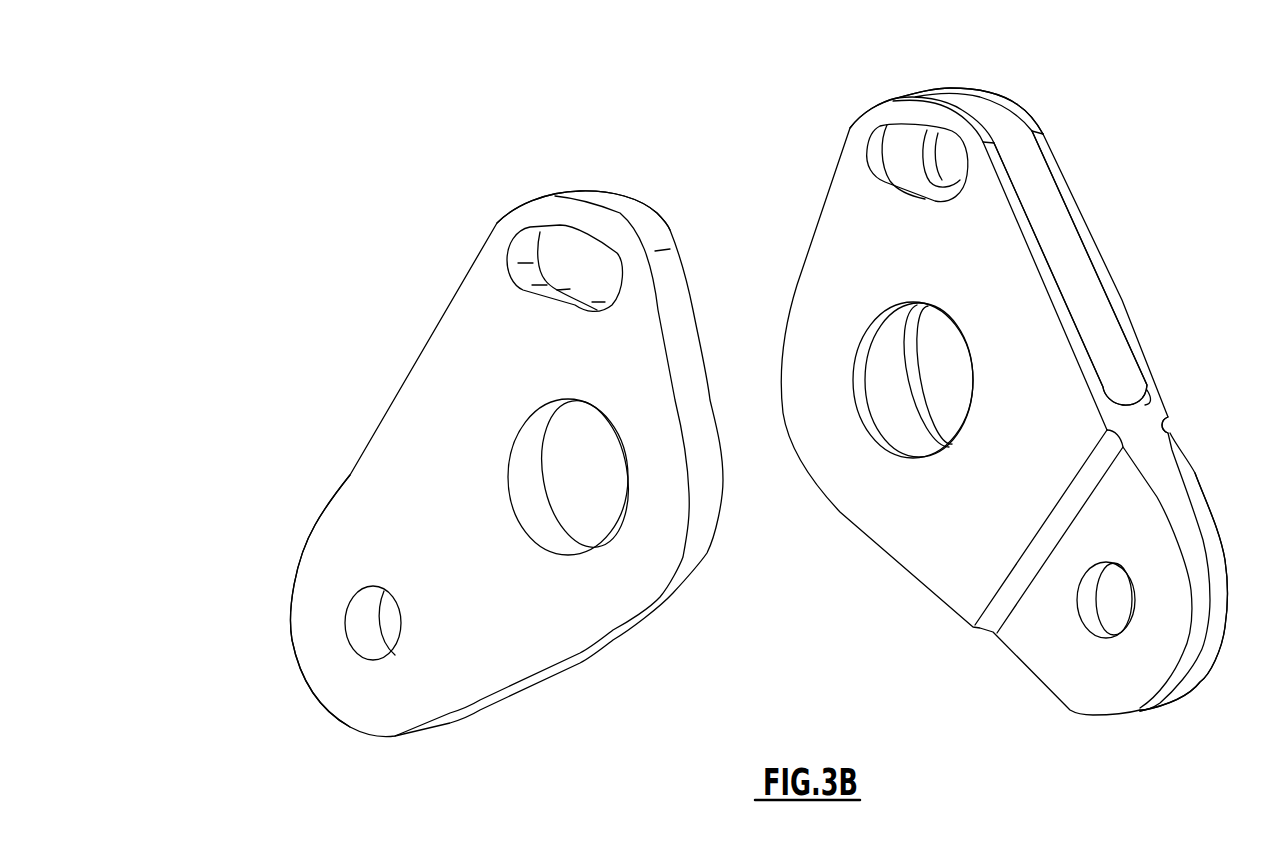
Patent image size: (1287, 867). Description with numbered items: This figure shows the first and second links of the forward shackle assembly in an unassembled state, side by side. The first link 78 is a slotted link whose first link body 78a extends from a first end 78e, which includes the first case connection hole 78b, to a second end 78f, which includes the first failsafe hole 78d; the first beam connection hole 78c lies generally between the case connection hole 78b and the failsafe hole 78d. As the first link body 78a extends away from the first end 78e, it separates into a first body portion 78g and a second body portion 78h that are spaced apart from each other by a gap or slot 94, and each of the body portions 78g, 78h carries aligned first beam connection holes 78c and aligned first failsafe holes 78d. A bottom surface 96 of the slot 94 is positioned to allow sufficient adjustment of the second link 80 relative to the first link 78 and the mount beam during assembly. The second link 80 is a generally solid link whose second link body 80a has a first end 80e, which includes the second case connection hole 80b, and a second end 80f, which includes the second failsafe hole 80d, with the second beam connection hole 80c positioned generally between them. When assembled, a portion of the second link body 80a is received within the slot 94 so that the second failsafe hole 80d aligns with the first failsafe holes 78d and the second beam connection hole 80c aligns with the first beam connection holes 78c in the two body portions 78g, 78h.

The first link 78 is at (1192, 490).
The first link body 78a is at (1137, 535).
The first case connection hole 78b is at (1108, 612).
The first beam connection hole 78c is at (878, 430).
The first failsafe hole 78d is at (918, 156).
The first end 78e is at (1215, 670).
The second end 78f is at (1004, 97).
The first body portion 78g is at (1100, 363).
The second body portion 78h is at (1112, 293).
The slot 94 is at (1087, 278).
The bottom surface 96 is at (1145, 404).
The second link 80 is at (345, 488).
The second link body 80a is at (470, 565).
The second case connection hole 80b is at (363, 645).
The second beam connection hole 80c is at (525, 450).
The second failsafe hole 80d is at (528, 246).
The first end 80e is at (300, 670).
The second end 80f is at (592, 200).